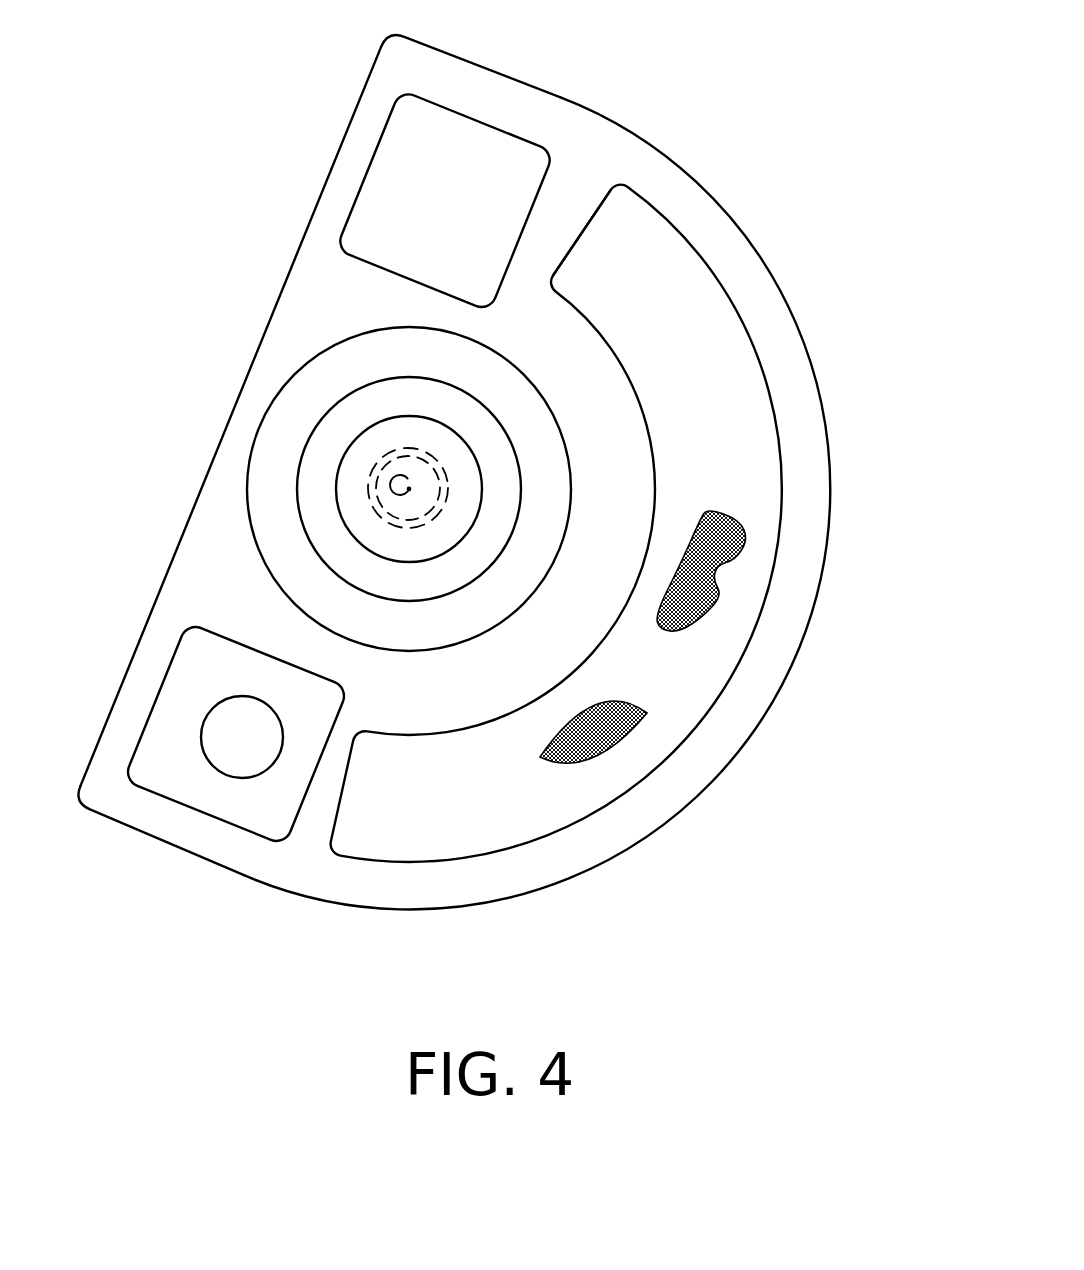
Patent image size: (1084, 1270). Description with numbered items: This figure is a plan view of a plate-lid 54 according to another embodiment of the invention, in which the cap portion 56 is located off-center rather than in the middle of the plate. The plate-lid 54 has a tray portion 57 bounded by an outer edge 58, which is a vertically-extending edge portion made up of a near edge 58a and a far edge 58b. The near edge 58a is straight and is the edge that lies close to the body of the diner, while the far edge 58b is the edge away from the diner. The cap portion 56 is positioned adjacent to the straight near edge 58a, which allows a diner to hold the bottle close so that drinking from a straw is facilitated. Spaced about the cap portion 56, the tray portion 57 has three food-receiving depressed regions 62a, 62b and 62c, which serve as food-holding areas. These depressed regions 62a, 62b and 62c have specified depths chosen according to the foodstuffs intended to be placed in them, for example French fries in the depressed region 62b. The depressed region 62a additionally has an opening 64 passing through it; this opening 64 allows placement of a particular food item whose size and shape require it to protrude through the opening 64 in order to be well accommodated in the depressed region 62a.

The plate-lid 54 is at (480, 502).
The cap portion 56 is at (355, 453).
The tray portion 57 is at (587, 312).
The outer edge 58 is at (495, 72).
The near edge 58a is at (298, 247).
The far edge 58b is at (795, 322).
The depressed region 62a is at (283, 813).
The depressed region 62b is at (510, 835).
The depressed region 62c is at (512, 152).
The opening 64 is at (242, 767).